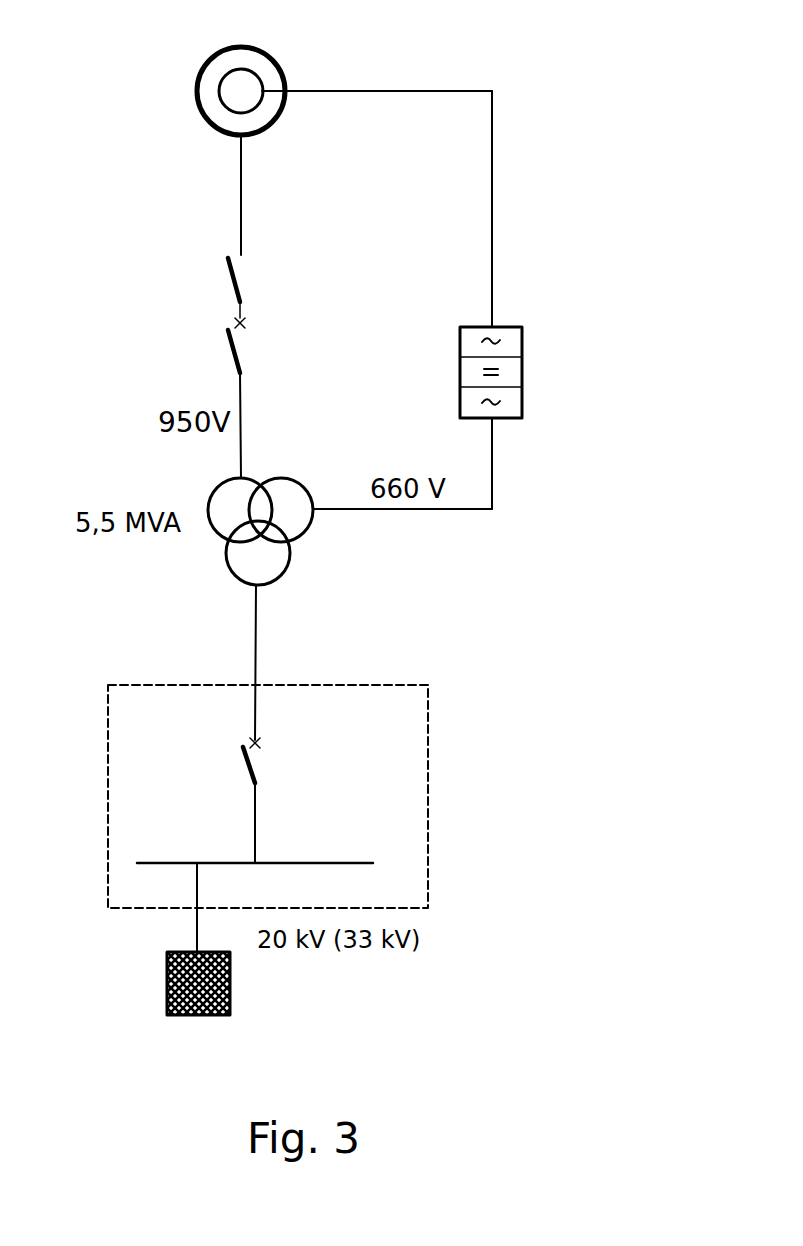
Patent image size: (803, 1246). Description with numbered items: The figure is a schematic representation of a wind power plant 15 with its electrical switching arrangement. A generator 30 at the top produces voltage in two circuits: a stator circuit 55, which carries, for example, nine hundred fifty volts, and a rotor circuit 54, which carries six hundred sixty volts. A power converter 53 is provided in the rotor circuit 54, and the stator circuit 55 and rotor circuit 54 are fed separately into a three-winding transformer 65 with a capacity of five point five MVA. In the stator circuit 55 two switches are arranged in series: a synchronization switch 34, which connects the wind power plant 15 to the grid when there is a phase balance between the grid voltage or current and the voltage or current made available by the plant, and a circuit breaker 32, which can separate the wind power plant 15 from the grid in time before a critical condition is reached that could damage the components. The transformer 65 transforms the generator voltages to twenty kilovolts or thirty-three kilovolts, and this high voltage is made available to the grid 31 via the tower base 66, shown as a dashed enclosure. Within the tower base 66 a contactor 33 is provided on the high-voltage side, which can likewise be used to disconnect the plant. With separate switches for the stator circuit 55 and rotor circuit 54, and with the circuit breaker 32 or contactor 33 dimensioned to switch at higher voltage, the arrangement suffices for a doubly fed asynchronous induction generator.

The generator 30 is at (252, 82).
The wind power plant 15 is at (590, 114).
The rotor circuit 54 is at (540, 249).
The stator circuit 55 is at (165, 255).
The synchronization switch 34 is at (237, 272).
The circuit breaker 32 is at (240, 356).
The power converter 53 is at (513, 373).
The three-winding transformer 65 is at (280, 550).
The tower base 66 is at (423, 852).
The contactor 33 is at (252, 763).
The grid 31 is at (230, 992).